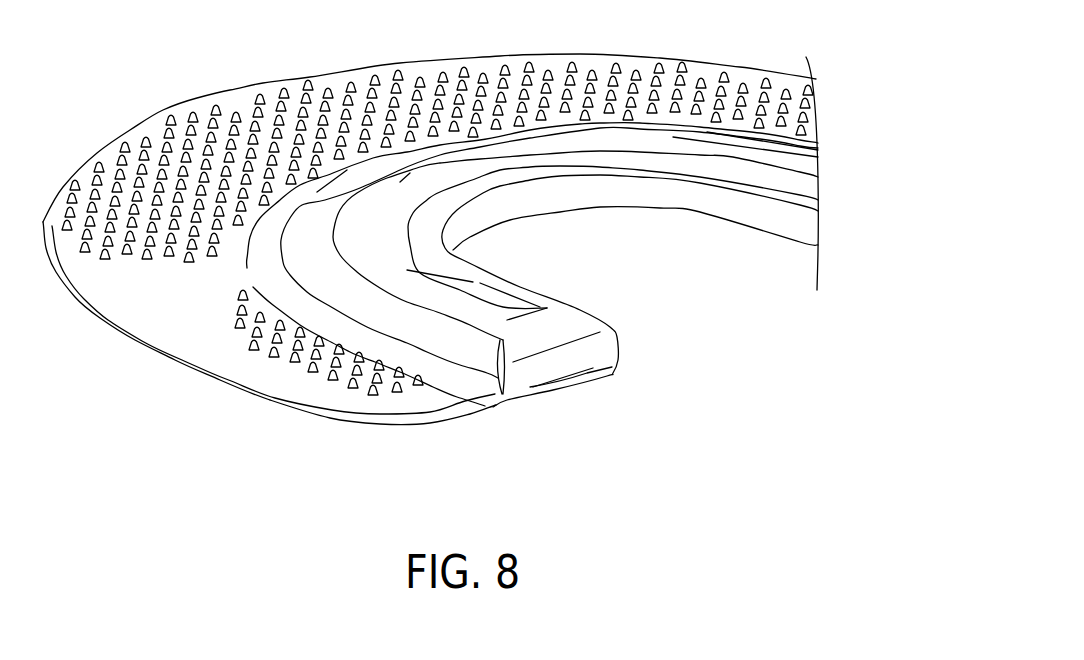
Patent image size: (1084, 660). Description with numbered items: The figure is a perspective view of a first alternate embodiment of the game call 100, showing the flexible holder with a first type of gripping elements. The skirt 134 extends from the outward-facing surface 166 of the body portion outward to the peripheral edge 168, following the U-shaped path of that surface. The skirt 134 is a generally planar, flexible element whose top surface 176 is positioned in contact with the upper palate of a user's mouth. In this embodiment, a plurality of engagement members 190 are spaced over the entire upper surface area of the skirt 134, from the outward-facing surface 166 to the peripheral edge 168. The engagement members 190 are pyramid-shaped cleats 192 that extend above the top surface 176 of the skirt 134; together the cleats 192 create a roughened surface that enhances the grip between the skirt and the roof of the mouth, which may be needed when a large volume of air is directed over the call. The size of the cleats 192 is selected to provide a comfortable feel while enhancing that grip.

The game call 100 is at (578, 50).
The skirt 134 is at (167, 330).
The outward-facing surface 166 is at (457, 350).
The peripheral edge 168 is at (113, 320).
The top surface 176 is at (330, 400).
The engagement members 190 is at (247, 90).
The pyramid-shaped cleats 192 is at (370, 397).